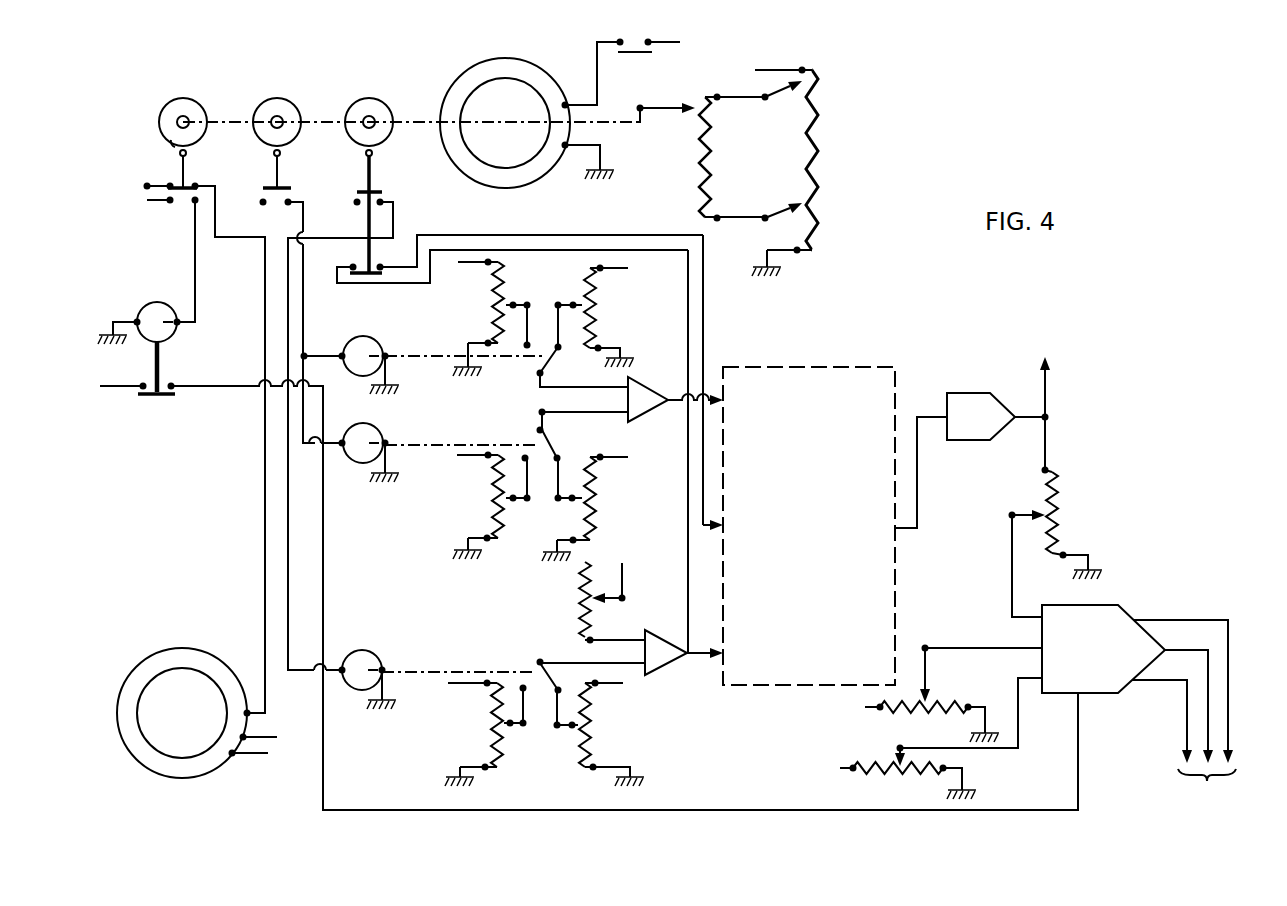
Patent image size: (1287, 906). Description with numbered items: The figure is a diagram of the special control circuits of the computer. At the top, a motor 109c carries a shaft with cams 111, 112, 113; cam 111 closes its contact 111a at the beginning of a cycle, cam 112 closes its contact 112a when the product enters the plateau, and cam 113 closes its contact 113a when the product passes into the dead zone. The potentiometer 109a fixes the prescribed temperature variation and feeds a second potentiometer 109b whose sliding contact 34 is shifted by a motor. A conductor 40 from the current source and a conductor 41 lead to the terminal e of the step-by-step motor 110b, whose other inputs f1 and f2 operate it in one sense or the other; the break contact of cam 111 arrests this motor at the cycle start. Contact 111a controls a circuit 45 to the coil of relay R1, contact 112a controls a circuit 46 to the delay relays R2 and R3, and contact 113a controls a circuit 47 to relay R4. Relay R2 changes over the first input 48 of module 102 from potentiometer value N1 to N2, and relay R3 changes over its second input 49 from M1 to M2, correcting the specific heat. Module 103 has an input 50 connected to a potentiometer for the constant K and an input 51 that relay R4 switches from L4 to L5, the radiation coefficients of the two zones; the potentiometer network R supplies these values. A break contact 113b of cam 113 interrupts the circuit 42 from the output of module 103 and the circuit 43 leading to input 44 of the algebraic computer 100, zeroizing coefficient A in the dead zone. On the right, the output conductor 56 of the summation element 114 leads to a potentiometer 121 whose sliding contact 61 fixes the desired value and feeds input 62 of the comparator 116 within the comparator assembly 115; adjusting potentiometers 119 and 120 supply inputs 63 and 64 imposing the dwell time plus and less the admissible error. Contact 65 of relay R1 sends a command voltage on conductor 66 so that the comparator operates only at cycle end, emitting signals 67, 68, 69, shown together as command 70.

The cam 111 is at (183, 112).
The cam 112 is at (277, 112).
The cam 113 is at (369, 112).
The motor 109c is at (478, 105).
The sliding contact 34 is at (636, 108).
The second potentiometer 109b is at (710, 160).
The potentiometer 109a is at (815, 150).
The conductor 40 is at (147, 186).
The contact 111a is at (170, 204).
The contact 112a is at (264, 205).
The contact 113a is at (358, 205).
The contact 113b is at (370, 277).
The circuit 45 is at (195, 272).
The conductor 41 is at (264, 320).
The circuit 46 is at (304, 312).
The circuit 47 is at (300, 672).
The relay R1 is at (157, 315).
The delay relay R2 is at (368, 348).
The delay relay R3 is at (362, 460).
The relay R4 is at (366, 660).
The contact 65 is at (150, 398).
The conductor 66 is at (230, 388).
The step-by-step motor 110b is at (170, 690).
The terminal e is at (247, 713).
The input f1 is at (262, 740).
The input f2 is at (232, 758).
The potentiometer value N1 is at (492, 305).
The potentiometer value N2 is at (594, 300).
The potentiometer value M1 is at (492, 498).
The potentiometer value M2 is at (594, 492).
The potentiometer value L5 is at (492, 730).
The potentiometer value L4 is at (590, 728).
The fixed value K is at (662, 582).
The resistance network R is at (538, 757).
The first input 48 is at (553, 389).
The second input 49 is at (563, 410).
The input 50 is at (618, 640).
The second input 51 is at (627, 665).
The module 102 is at (650, 392).
The module 103 is at (660, 643).
The circuit 42 is at (688, 296).
The circuit 43 is at (703, 312).
The input 44 is at (700, 527).
The algebraic computer 100 is at (815, 526).
The summation element 114 is at (967, 413).
The output conductor 56 is at (1047, 437).
The potentiometer 121 is at (1058, 500).
The sliding contact 61 is at (1010, 513).
The input 62 is at (1012, 575).
The comparator 116 is at (1095, 615).
The second input 63 is at (968, 648).
The third input 64 is at (1016, 692).
The adjusting potentiometer 119 is at (895, 722).
The second adjusting potentiometer 120 is at (875, 785).
The comparator assembly 115 is at (1095, 715).
The signal 67 is at (1187, 748).
The signal 68 is at (1208, 733).
The signal 69 is at (1228, 710).
The command 70 is at (1207, 790).